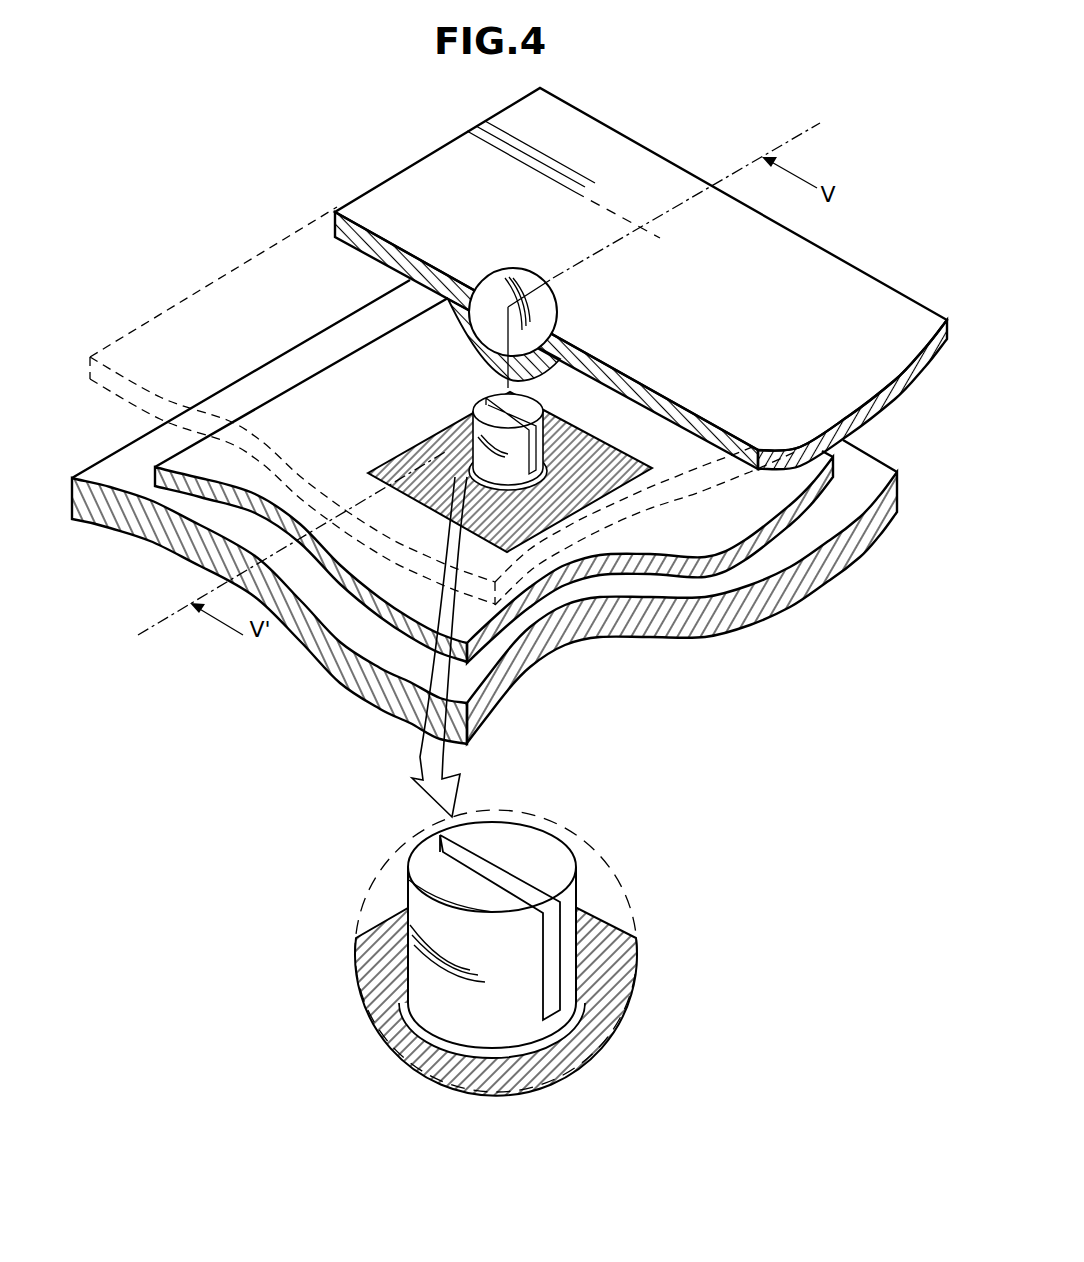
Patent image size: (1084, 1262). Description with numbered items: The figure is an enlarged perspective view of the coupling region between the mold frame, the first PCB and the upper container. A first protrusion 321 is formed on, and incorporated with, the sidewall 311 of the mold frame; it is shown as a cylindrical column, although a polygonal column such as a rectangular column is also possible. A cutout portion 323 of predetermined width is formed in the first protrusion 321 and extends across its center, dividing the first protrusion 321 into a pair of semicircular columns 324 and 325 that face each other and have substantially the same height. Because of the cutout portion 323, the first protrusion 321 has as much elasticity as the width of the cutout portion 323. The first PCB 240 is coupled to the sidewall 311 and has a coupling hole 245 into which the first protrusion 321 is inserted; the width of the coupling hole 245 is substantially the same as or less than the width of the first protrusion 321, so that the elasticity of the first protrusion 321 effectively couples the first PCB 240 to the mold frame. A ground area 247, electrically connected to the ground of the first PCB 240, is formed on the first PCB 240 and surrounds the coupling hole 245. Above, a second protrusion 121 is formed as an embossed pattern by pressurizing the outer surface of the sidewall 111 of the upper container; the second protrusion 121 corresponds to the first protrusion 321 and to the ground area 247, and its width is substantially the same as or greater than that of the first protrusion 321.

The sidewall of the upper container 111 is at (410, 176).
The second protrusion 121 is at (552, 260).
The first PCB 240 is at (357, 568).
The coupling hole 245 is at (546, 478).
The ground area 247 is at (487, 490).
The sidewall of the mold frame 311 is at (123, 514).
The first protrusion 321 is at (446, 438).
The cutout portion 323 is at (466, 860).
The semicircular column 324 is at (443, 890).
The semicircular column 325 is at (520, 844).